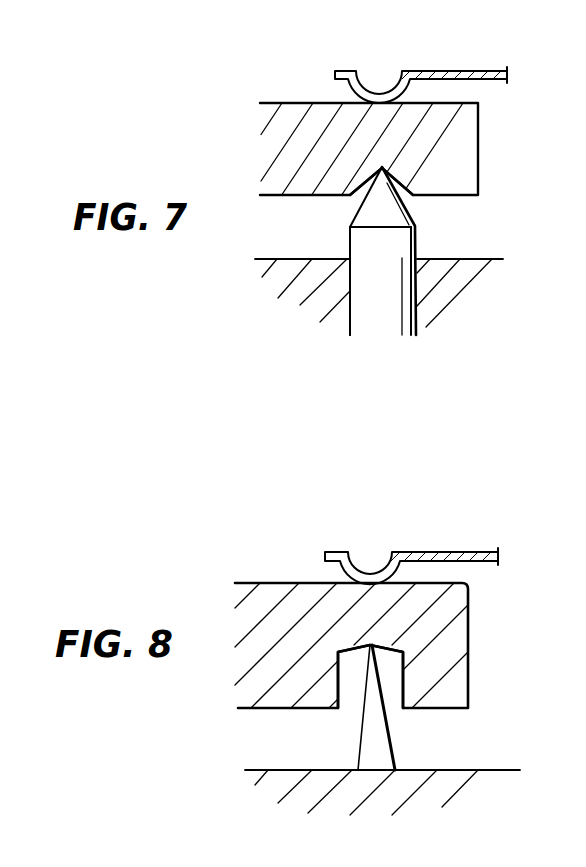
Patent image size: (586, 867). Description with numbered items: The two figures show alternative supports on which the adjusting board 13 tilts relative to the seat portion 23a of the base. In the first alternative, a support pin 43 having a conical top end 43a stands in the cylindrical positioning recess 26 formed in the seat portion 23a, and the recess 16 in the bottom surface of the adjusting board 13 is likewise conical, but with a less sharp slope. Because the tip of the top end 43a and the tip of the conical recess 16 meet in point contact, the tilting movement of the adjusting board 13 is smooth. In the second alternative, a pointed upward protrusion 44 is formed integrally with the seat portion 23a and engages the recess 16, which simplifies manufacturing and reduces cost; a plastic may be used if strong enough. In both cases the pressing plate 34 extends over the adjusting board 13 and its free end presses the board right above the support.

In FIG. 7, the adjusting board 13 is at (470, 145).
In FIG. 8, the adjusting board 13 is at (469, 606).
In FIG. 7, the recess 16 is at (357, 187).
In FIG. 8, the recess 16 is at (405, 667).
In FIG. 7, the pressing plate 34 is at (470, 72).
In FIG. 8, the pressing plate 34 is at (483, 553).
In FIG. 7, the support pin 43 is at (390, 243).
In FIG. 7, the conical top end 43a is at (383, 196).
In FIG. 7, the positioning recess 26 is at (350, 292).
In FIG. 7, the seat portion 23a is at (455, 288).
In FIG. 8, the seat portion 23a is at (488, 782).
In FIG. 8, the pointed upward protrusion 44 is at (382, 728).